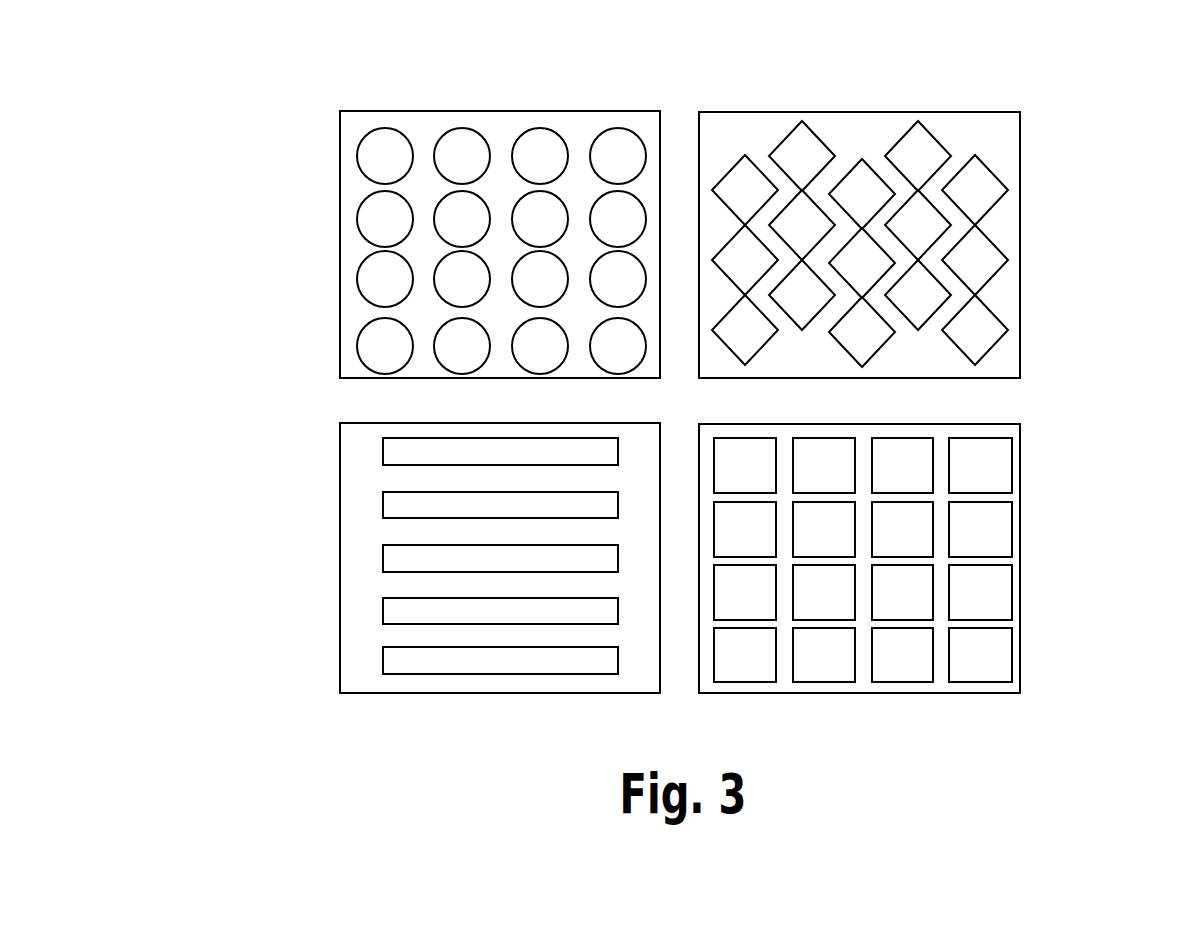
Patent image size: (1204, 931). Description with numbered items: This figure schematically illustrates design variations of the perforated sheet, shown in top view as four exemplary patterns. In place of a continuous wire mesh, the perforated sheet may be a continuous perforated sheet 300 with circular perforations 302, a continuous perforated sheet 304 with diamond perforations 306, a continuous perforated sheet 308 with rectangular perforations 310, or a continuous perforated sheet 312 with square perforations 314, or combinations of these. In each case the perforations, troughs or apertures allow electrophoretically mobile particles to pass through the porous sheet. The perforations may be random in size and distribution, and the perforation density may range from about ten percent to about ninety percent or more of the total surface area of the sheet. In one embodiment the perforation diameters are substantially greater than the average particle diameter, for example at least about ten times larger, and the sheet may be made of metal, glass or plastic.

The continuous perforated sheet with circular perforations 300 is at (420, 203).
The circular perforations 302 is at (385, 150).
The continuous perforated sheet with diamond perforations 304 is at (945, 203).
The diamond perforations 306 is at (910, 150).
The continuous perforated sheet with rectangular perforations 308 is at (420, 558).
The rectangular perforations 310 is at (408, 609).
The continuous perforated sheet with square perforations 312 is at (946, 558).
The square perforations 314 is at (985, 593).